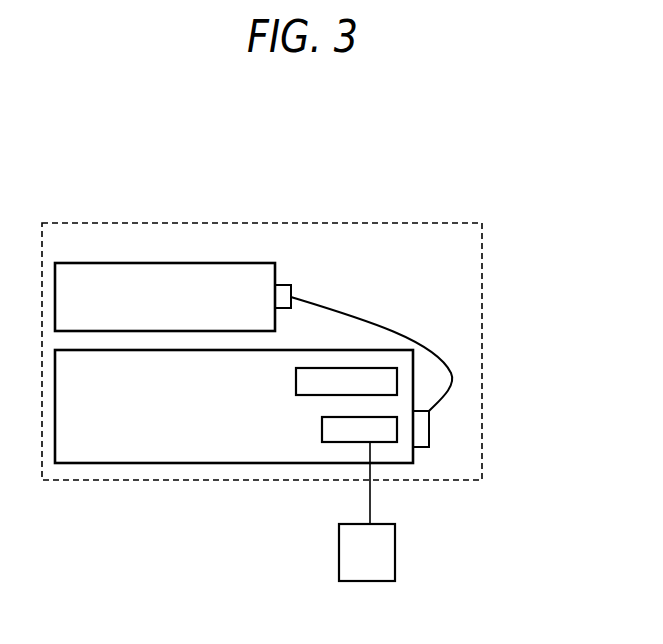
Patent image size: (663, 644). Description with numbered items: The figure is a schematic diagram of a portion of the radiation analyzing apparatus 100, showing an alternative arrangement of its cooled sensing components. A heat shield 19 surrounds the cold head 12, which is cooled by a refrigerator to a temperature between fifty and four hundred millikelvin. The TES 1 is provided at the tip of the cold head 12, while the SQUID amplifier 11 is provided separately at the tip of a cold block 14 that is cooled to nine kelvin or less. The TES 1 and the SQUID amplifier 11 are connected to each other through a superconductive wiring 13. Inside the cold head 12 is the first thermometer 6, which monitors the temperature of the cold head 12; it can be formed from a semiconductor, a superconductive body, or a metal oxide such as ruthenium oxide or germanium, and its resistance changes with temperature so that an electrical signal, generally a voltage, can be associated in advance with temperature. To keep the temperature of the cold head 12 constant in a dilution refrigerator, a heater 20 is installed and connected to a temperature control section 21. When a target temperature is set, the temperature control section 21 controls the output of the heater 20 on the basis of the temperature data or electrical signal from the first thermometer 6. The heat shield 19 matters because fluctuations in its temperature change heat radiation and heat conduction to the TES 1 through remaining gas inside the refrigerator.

The laser processing system 100 is at (505, 193).
The heat shield 19 is at (352, 222).
The cold block 14 is at (133, 263).
The SQUID amplifier 11 is at (291, 295).
The cold head 12 is at (118, 463).
The first thermometer 6 is at (296, 383).
The heater 20 is at (322, 430).
The TES 1 is at (430, 431).
The superconductive wiring 13 is at (451, 373).
The temperature control section 21 is at (395, 551).